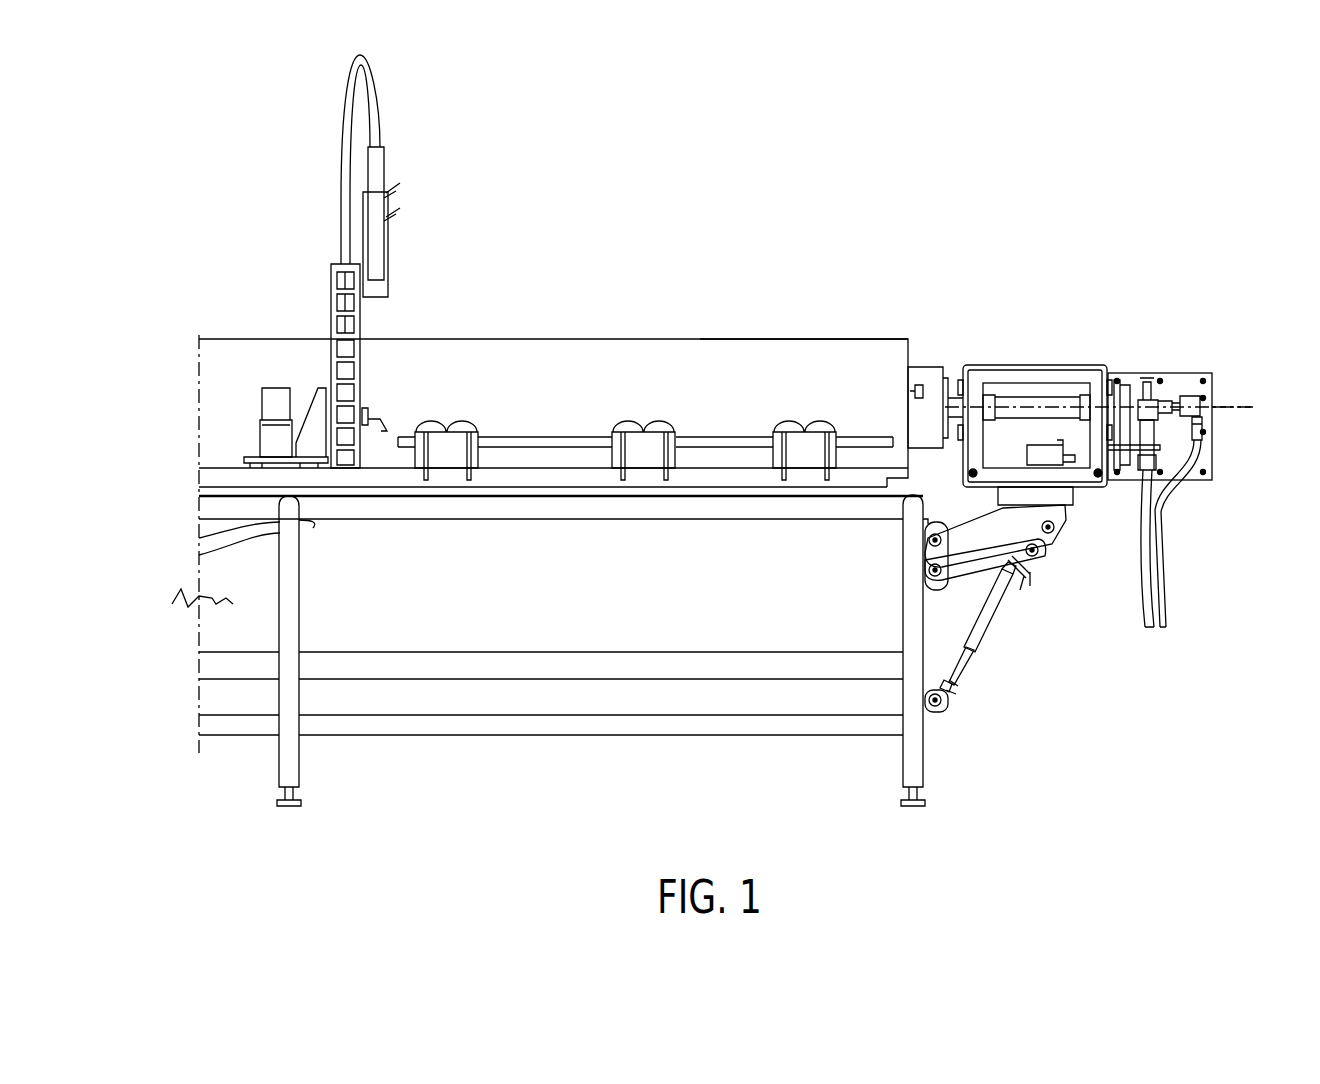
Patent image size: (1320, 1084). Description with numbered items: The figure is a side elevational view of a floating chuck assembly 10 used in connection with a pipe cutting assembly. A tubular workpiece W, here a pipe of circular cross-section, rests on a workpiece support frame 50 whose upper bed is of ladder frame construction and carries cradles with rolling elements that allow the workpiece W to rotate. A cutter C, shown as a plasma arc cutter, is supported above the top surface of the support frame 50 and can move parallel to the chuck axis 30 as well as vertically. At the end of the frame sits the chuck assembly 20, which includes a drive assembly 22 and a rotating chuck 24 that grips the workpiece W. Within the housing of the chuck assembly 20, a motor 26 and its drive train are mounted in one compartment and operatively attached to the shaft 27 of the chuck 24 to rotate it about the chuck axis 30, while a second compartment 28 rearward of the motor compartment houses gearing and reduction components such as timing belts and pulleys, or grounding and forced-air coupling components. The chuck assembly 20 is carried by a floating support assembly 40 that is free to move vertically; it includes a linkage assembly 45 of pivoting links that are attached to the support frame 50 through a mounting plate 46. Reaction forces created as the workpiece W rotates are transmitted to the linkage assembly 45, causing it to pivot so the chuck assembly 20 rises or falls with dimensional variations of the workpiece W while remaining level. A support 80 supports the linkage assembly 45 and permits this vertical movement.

The floating chuck assembly 10 is at (980, 229).
The chuck assembly 20 is at (993, 361).
The drive assembly 22 is at (1050, 392).
The rotating chuck 24 is at (928, 364).
The motor 26 is at (1043, 468).
The shaft 27 is at (1008, 403).
The second compartment 28 is at (1148, 373).
The chuck axis 30 is at (1232, 409).
The floating support assembly 40 is at (1018, 600).
The linkage assembly 45 is at (956, 511).
The mounting plate 46 is at (926, 632).
The workpiece support frame 50 is at (331, 670).
The support 80 is at (986, 628).
The cutter C is at (329, 258).
The workpiece W is at (758, 340).